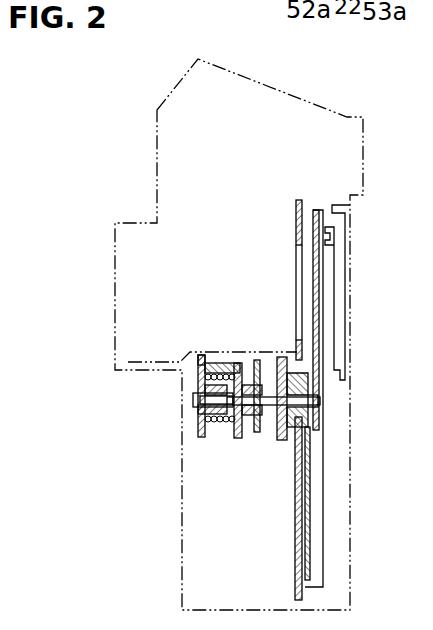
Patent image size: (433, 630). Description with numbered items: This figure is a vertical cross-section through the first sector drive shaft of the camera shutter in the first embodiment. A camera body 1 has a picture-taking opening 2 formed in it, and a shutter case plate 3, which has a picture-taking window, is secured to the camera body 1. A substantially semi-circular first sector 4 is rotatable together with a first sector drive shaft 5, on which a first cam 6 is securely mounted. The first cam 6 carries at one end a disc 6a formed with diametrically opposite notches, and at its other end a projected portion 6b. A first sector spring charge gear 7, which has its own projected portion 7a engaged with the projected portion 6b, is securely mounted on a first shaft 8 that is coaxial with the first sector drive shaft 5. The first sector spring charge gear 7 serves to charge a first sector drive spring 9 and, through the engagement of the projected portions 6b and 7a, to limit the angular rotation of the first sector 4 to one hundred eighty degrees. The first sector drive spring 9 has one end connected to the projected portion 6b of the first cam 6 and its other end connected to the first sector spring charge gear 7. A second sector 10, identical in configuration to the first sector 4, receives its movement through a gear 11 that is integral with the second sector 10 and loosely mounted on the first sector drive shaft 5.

The camera body 1 is at (360, 133).
The picture-taking opening 2 is at (323, 285).
The shutter case plate 3 is at (300, 200).
The first sector 4 is at (317, 207).
The first sector drive shaft 5 is at (269, 405).
The first cam 6 is at (245, 435).
The disc 6a is at (257, 362).
The projected portion 6b is at (227, 363).
The first sector spring charge gear 7 is at (198, 428).
The projected portion 7a is at (208, 360).
The first shaft 8 is at (193, 398).
The first sector drive spring 9 is at (212, 424).
The second sector 10 is at (310, 547).
The gear 11 is at (280, 357).